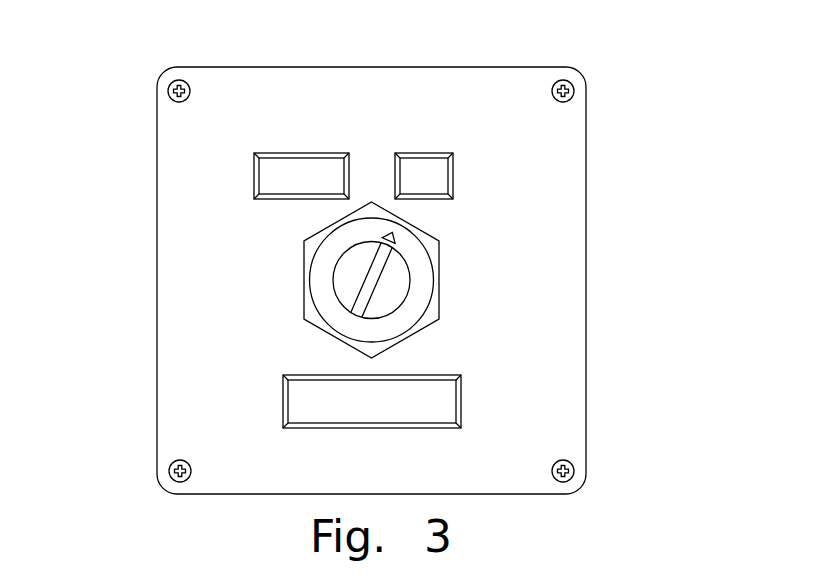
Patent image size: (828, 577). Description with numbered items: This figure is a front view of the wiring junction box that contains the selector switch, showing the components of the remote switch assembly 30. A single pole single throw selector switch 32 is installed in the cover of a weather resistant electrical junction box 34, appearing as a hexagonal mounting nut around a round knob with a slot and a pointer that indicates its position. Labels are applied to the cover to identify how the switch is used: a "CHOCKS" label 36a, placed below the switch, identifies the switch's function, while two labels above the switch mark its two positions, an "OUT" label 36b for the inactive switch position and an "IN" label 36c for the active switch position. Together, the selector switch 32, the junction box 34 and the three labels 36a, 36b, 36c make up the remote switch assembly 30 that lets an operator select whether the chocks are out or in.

The remote switch assembly 30 is at (383, 247).
The selector switch 32 is at (325, 278).
The weather resistant electrical junction box 34 is at (583, 167).
The "CHOCKS" label 36a is at (425, 375).
The "OUT" label 36b is at (298, 153).
The "IN" label 36c is at (422, 153).